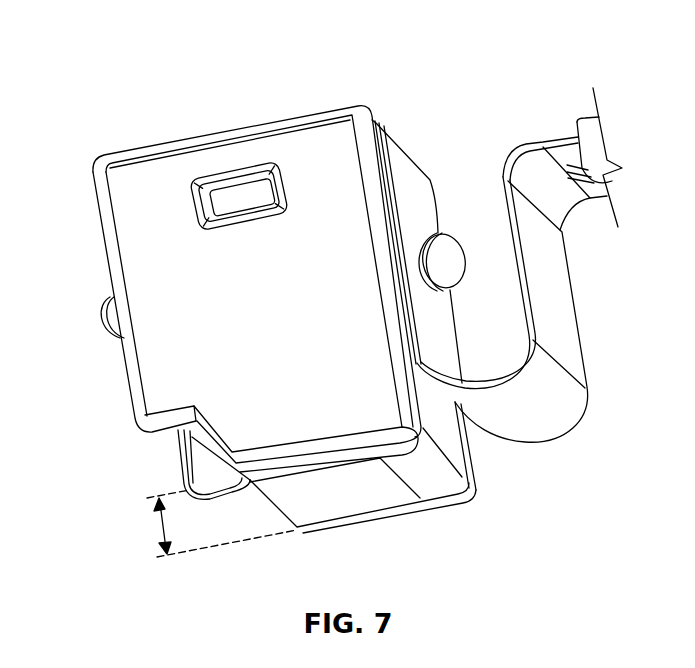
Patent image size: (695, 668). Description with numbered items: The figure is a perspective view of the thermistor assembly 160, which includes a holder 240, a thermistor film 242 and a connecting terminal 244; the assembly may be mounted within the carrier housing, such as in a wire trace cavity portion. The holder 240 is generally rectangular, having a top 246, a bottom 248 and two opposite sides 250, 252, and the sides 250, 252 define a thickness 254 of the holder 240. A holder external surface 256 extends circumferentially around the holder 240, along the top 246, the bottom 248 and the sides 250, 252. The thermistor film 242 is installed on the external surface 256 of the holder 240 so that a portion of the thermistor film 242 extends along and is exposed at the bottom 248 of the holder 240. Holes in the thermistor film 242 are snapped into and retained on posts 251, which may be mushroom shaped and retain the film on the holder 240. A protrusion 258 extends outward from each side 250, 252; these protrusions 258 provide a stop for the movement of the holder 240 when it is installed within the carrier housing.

The thermistor assembly 160 is at (109, 100).
The holder 240 is at (173, 334).
The thermistor film 242 is at (373, 490).
The connecting terminal 244 is at (537, 147).
The top 246 is at (213, 133).
The bottom 248 is at (276, 463).
The side 250 is at (303, 137).
The post 251 is at (449, 255).
The side 252 is at (480, 470).
The thickness 254 is at (157, 530).
The holder external surface 256 is at (470, 490).
The protrusion 258 is at (233, 167).